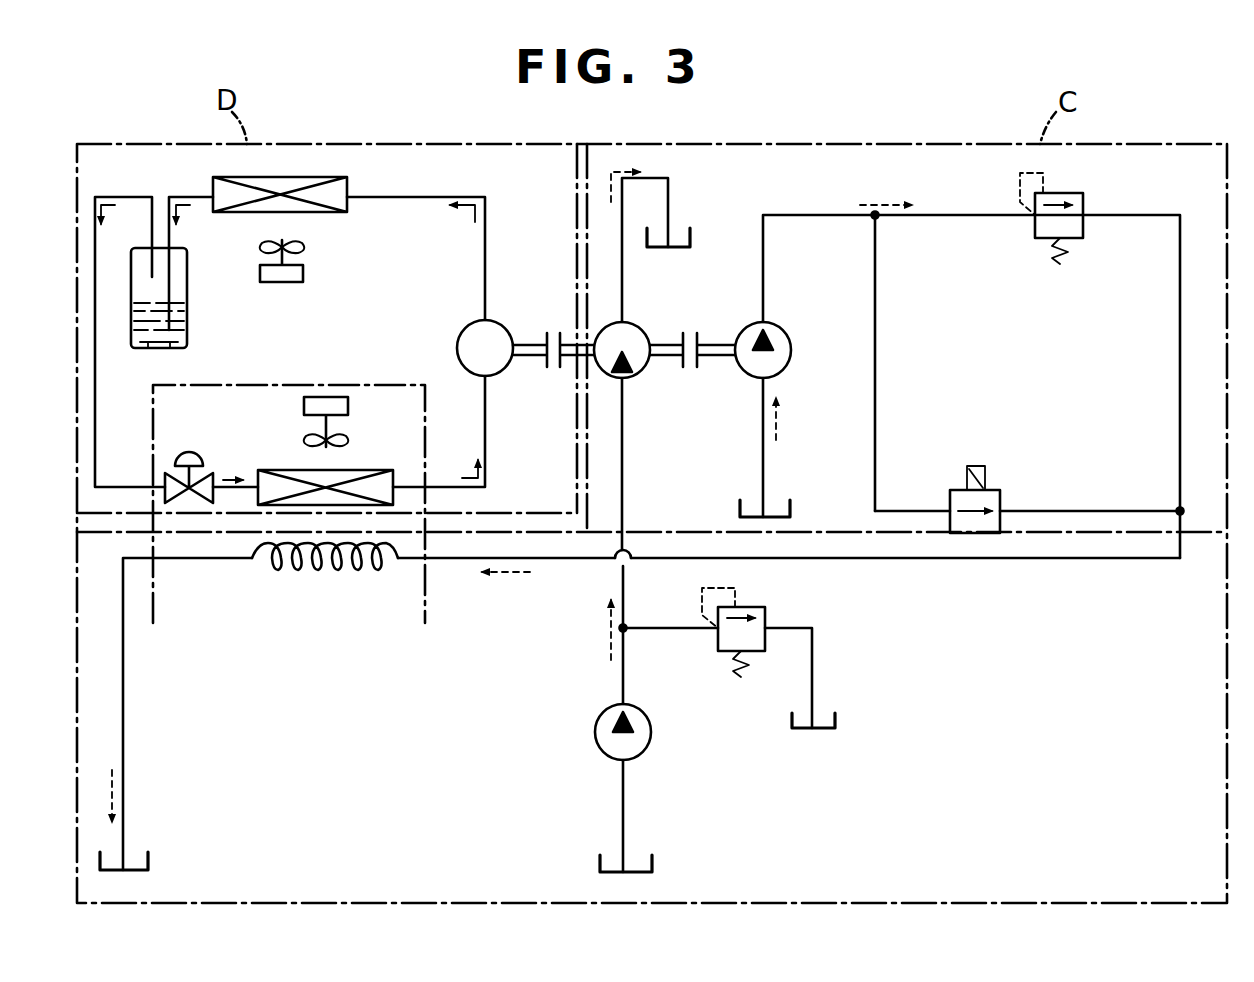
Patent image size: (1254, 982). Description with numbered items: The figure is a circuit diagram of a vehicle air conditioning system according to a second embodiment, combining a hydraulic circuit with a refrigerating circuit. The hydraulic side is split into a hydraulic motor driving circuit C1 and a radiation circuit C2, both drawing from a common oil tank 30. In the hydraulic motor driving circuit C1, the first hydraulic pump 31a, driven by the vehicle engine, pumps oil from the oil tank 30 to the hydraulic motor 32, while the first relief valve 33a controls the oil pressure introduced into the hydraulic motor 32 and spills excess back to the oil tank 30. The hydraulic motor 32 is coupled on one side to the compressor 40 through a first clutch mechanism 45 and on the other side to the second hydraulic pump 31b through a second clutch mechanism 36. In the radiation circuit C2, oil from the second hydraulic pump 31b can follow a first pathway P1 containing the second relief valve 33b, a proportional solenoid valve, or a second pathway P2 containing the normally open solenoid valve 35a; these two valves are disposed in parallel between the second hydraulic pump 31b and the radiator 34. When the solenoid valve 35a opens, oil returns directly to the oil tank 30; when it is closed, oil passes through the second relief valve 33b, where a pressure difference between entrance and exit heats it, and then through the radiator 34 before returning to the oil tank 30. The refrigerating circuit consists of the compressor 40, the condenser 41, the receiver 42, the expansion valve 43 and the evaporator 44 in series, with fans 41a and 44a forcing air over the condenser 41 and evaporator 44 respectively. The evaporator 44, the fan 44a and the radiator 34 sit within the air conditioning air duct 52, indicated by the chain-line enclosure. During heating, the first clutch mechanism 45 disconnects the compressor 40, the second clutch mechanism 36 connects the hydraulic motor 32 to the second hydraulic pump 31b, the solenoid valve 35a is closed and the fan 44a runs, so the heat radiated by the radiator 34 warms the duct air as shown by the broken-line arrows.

The oil tank 30 is at (675, 248).
The first hydraulic pump 31a is at (645, 752).
The second hydraulic pump 31b is at (785, 370).
The hydraulic motor 32 is at (640, 373).
The first relief valve 33a is at (765, 614).
The second relief valve 33b is at (1083, 200).
The radiator 34 is at (312, 570).
The solenoid valve 35a is at (1000, 496).
The second clutch mechanism 36 is at (690, 368).
The compressor 40 is at (505, 330).
The condenser 41 is at (347, 190).
The fan 41a is at (303, 275).
The receiver 42 is at (187, 343).
The expansion valve 43 is at (189, 458).
The evaporator 44 is at (385, 470).
The fan 44a is at (326, 397).
The first clutch mechanism 45 is at (553, 368).
The air conditioning air duct 52 is at (427, 612).
The hydraulic motor driving circuit C1 is at (688, 225).
The radiation circuit C2 is at (1152, 212).
The first pathway P1 is at (957, 217).
The second pathway P2 is at (876, 437).